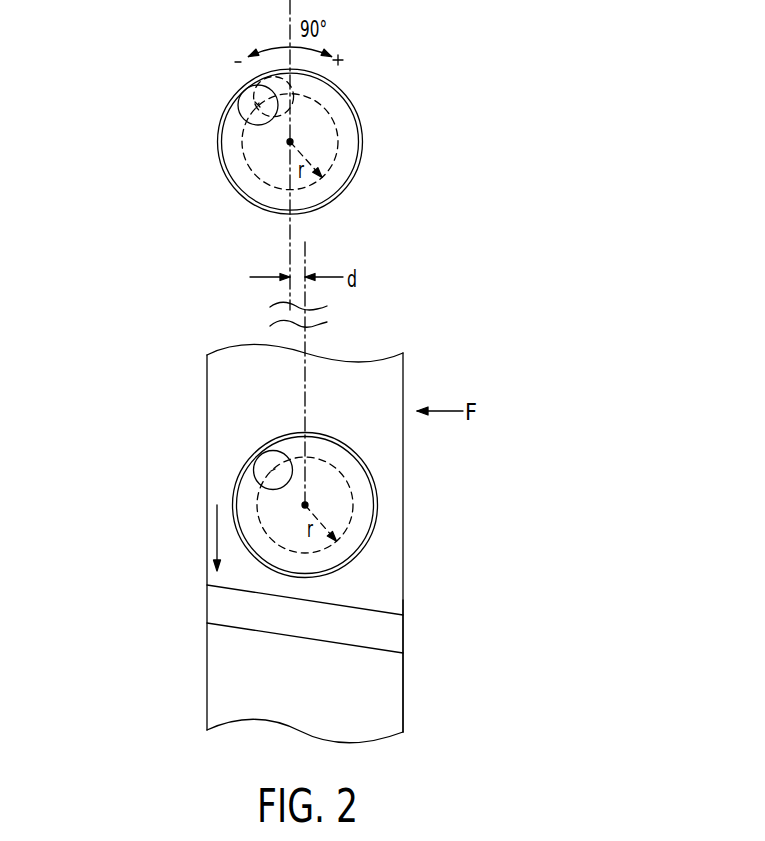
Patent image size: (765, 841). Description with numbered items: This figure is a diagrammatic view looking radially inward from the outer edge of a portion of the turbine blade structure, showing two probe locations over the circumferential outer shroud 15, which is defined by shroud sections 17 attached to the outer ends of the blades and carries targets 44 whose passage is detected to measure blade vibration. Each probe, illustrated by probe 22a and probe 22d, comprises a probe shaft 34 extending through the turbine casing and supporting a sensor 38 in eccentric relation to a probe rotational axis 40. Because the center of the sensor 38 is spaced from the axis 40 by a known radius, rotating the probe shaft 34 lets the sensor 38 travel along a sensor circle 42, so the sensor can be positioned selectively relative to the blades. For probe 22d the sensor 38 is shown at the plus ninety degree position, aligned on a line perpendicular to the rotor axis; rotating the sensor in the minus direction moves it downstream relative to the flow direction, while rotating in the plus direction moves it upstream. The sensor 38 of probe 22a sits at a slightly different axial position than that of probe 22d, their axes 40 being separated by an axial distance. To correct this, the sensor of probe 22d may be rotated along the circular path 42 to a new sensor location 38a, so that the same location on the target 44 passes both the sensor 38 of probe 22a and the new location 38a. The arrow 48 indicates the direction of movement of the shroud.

The circumferential outer shroud 15 is at (200, 679).
The shroud section 17 is at (393, 687).
The probe 22a is at (372, 532).
The probe 22d is at (360, 160).
The probe shaft 34 is at (342, 188).
The sensor 38 is at (244, 91).
The sensor location 38a is at (263, 110).
The probe rotational axis 40 is at (292, 140).
The sensor circle 42 is at (338, 117).
The target 44 is at (272, 623).
The direction of movement arrow 48 is at (215, 533).